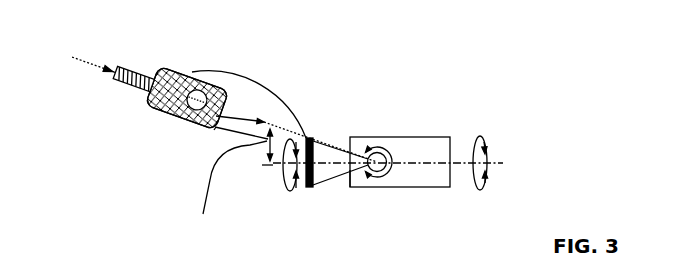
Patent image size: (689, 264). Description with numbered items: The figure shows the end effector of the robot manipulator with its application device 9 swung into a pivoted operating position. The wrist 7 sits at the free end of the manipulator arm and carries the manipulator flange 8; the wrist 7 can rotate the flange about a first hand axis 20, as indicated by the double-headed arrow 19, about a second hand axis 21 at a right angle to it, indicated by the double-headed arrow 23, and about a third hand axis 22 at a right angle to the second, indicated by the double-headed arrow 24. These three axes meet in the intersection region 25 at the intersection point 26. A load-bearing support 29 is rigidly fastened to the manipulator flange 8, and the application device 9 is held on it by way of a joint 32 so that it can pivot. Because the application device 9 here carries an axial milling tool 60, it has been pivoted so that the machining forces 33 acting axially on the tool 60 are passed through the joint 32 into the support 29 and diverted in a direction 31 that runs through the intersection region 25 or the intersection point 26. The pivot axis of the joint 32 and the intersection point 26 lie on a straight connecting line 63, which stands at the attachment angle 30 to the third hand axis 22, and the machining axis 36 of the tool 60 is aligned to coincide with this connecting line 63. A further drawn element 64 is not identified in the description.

The wrist 7 is at (344, 127).
The manipulator flange 8 is at (305, 141).
The application device 9 is at (161, 111).
The double-headed arrow 19 is at (482, 142).
The first hand axis 20 is at (498, 158).
The second hand axis 21 is at (380, 156).
The third hand axis 22 is at (262, 166).
The double-headed arrow 23 is at (393, 153).
The double-headed arrow 24 is at (284, 186).
The intersection region 25 is at (390, 180).
The intersection point 26 is at (348, 178).
The load-bearing support 29 is at (237, 90).
The attachment angle 30 is at (230, 181).
The direction 31 is at (238, 116).
The joint 32 is at (198, 90).
The machining forces 33 is at (78, 64).
The machining axis 36 is at (122, 69).
The tool 60 is at (122, 82).
The straight connecting line 63 is at (211, 125).
The fiber connector 64 is at (114, 66).